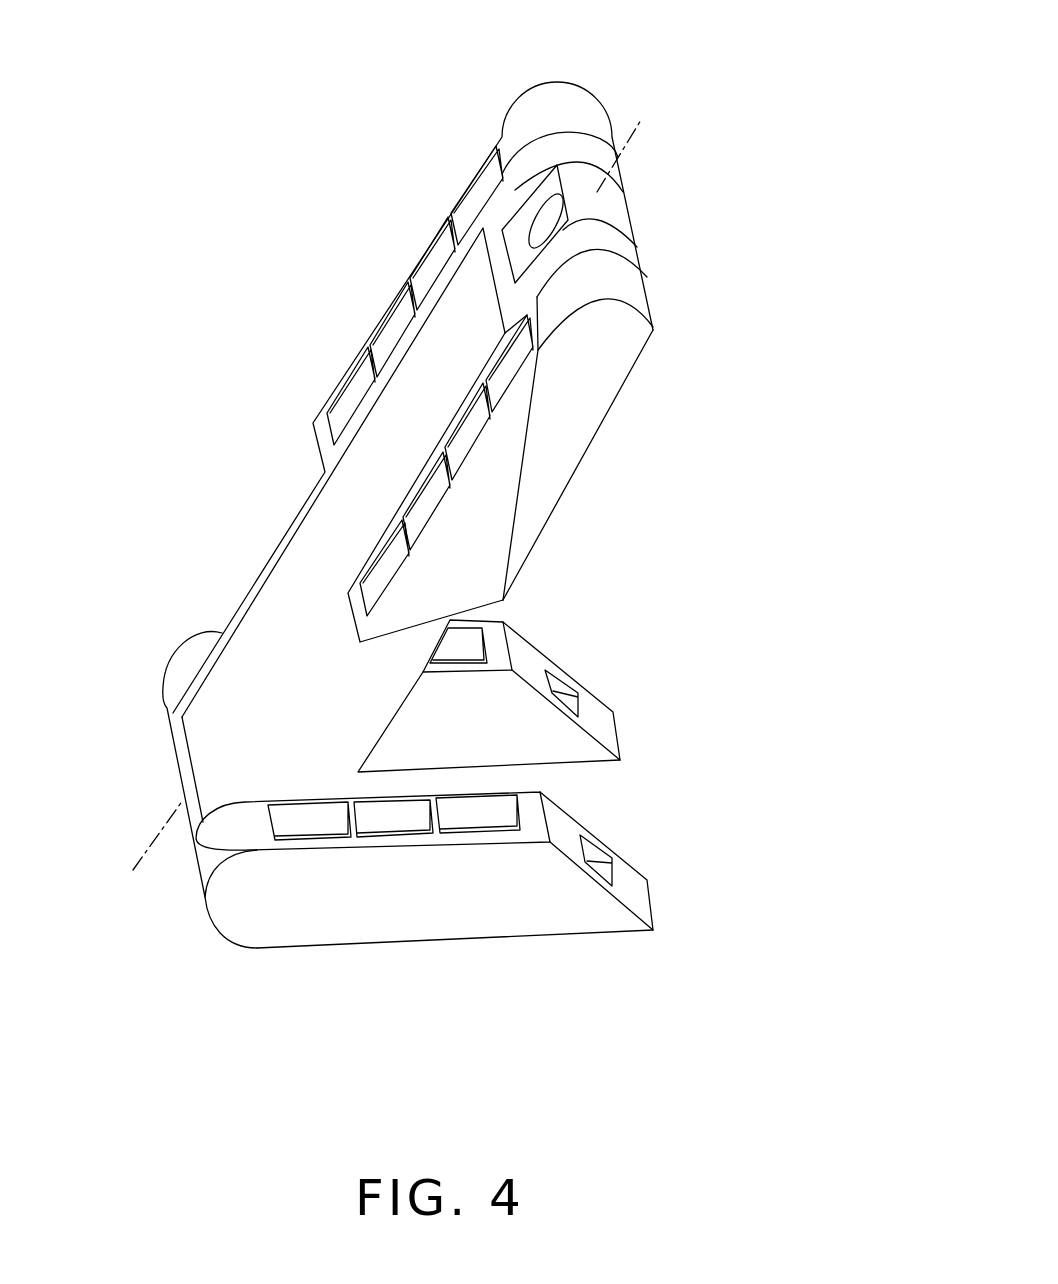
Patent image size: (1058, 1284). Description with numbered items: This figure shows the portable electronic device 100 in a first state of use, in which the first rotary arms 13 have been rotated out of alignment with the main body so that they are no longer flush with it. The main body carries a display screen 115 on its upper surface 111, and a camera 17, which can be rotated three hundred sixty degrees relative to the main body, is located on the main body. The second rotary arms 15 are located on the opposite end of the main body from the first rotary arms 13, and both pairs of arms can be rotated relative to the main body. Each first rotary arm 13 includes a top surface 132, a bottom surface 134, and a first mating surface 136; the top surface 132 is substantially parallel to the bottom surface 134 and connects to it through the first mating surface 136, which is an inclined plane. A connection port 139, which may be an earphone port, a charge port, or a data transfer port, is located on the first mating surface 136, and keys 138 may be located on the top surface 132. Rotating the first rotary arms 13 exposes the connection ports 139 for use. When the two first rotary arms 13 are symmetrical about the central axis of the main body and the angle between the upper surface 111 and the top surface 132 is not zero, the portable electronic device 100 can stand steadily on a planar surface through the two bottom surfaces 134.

The portable electronic device 100 is at (457, 31).
The display screen 115 is at (318, 537).
The keys 138 is at (432, 255).
The camera 17 is at (605, 198).
The second rotary arms 15 is at (583, 390).
The upper surface 111 is at (180, 752).
The top surface 132 is at (503, 650).
The first rotary arms 13 is at (267, 895).
The first mating surface 136 is at (637, 897).
The connection port 139 is at (600, 863).
The bottom surface 134 is at (577, 933).